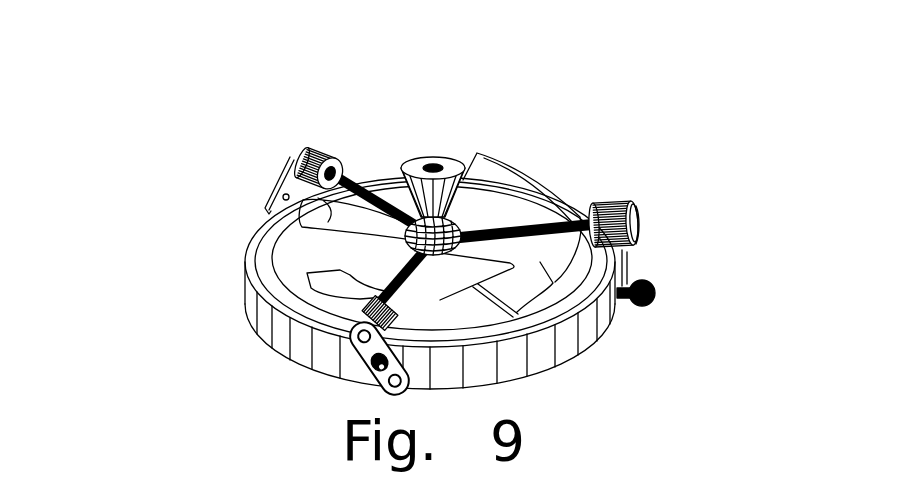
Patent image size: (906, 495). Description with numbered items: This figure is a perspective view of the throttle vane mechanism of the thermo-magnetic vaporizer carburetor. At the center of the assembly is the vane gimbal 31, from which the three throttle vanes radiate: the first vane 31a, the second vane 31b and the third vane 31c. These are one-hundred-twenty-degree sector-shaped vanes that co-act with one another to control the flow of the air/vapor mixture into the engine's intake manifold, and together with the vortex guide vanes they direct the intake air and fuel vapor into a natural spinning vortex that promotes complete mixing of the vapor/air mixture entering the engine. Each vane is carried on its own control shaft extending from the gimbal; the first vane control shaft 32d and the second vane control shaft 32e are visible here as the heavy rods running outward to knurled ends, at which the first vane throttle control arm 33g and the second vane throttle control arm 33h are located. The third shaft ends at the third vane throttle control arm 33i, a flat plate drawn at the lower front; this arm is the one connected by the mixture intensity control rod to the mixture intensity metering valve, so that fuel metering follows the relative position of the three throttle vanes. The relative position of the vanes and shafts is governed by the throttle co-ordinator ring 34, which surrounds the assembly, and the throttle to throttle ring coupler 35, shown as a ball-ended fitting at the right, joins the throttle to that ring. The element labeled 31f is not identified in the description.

The vane gimbal 31 is at (431, 148).
The vane 1 31a is at (300, 215).
The vane 2 31b is at (490, 156).
The vane 3 31c is at (352, 233).
The cutter blade support arm 31f is at (347, 322).
The vane 1 control shaft 32d is at (356, 152).
The vane 2 control shaft 32e is at (583, 200).
The vane 1 throttle control arm 33g is at (308, 152).
The vane 2 throttle control arm 33h is at (624, 202).
The vane 3 throttle control arm 33i is at (373, 355).
The throttle co-ordinator ring 34 is at (600, 318).
The throttle to throttle ring coupler 35 is at (657, 292).